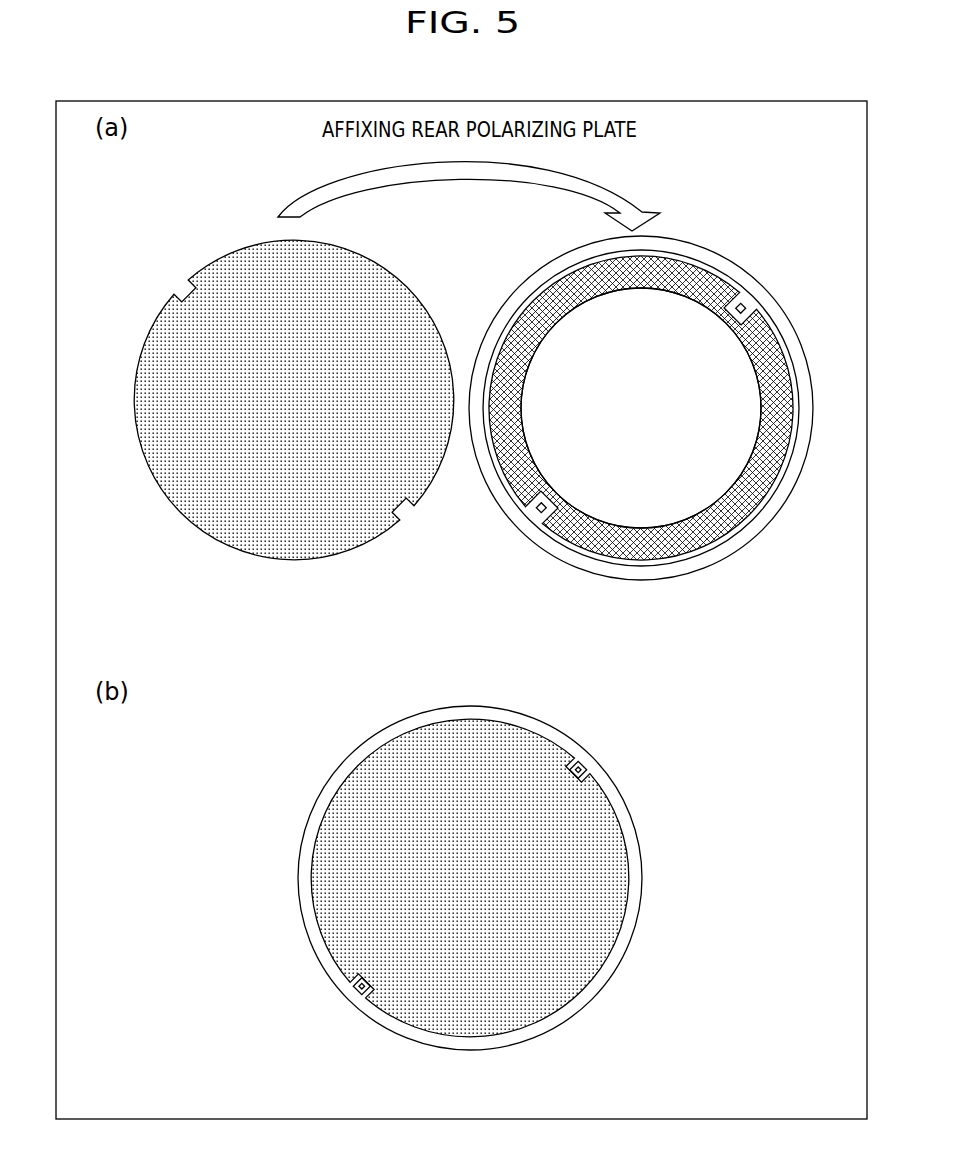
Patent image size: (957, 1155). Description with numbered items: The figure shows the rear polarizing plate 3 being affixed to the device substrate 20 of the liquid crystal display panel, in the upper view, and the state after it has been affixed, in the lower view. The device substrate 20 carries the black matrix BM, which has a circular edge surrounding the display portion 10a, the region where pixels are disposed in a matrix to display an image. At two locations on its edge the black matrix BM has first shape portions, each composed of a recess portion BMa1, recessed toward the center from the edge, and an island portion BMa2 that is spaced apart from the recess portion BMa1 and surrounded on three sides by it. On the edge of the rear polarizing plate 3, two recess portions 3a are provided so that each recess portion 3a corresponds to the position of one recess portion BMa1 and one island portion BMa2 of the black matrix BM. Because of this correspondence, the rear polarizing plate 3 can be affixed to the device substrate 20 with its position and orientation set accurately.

The rear polarizing plate 3 is at (141, 432).
The recess portion 3a is at (178, 300).
The device substrate 20 is at (701, 258).
The display portion 10a is at (730, 408).
The black matrix BM is at (715, 549).
The recess portion BMa1 is at (534, 526).
The island portion BMa2 is at (524, 516).